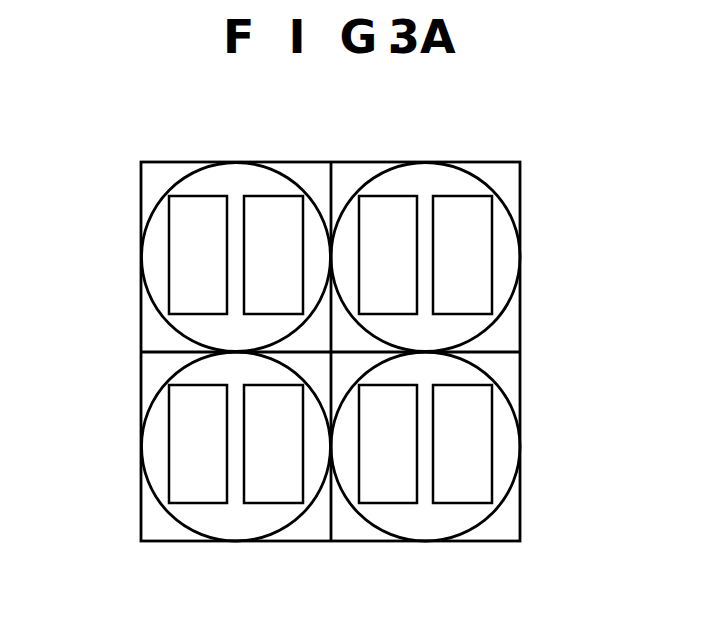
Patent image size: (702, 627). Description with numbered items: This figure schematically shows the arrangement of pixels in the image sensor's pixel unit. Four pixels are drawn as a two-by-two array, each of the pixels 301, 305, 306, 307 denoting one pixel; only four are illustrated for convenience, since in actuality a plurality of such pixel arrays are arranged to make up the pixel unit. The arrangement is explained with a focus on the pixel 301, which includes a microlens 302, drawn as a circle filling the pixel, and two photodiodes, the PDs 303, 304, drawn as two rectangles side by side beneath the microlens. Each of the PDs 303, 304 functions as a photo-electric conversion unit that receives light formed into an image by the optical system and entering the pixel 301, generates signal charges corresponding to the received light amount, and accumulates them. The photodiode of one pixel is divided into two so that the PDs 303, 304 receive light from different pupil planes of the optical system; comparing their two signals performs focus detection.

The pixel 301 is at (310, 162).
The microlens 302 is at (182, 175).
The PD 303 is at (168, 259).
The PD 304 is at (257, 192).
The pixel 305 is at (497, 162).
The pixel 306 is at (178, 543).
The pixel 307 is at (375, 543).